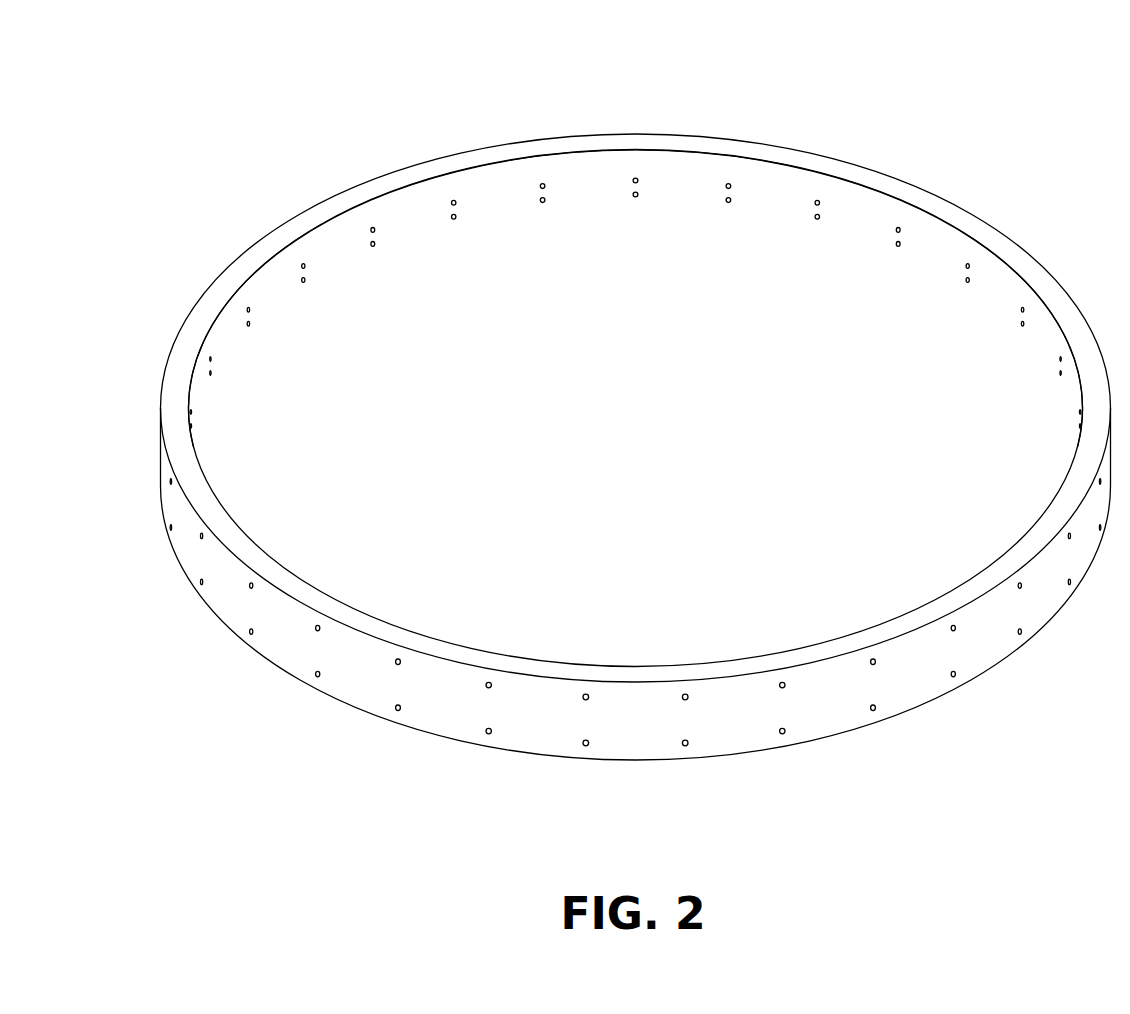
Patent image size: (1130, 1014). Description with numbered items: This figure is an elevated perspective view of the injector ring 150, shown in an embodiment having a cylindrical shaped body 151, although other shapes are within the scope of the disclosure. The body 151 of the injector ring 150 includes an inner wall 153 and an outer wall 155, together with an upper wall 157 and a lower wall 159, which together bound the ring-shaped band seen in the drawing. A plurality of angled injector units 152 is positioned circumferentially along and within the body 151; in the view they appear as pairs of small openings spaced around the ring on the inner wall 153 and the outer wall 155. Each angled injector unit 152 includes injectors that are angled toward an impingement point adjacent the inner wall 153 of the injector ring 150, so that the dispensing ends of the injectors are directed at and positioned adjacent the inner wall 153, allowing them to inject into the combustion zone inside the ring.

The injector ring 150 is at (636, 410).
The body 151 is at (1053, 295).
The angled injector unit 152 is at (373, 210).
The inner wall 153 is at (687, 205).
The outer wall 155 is at (912, 677).
The upper wall 157 is at (550, 136).
The lower wall 159 is at (1005, 666).